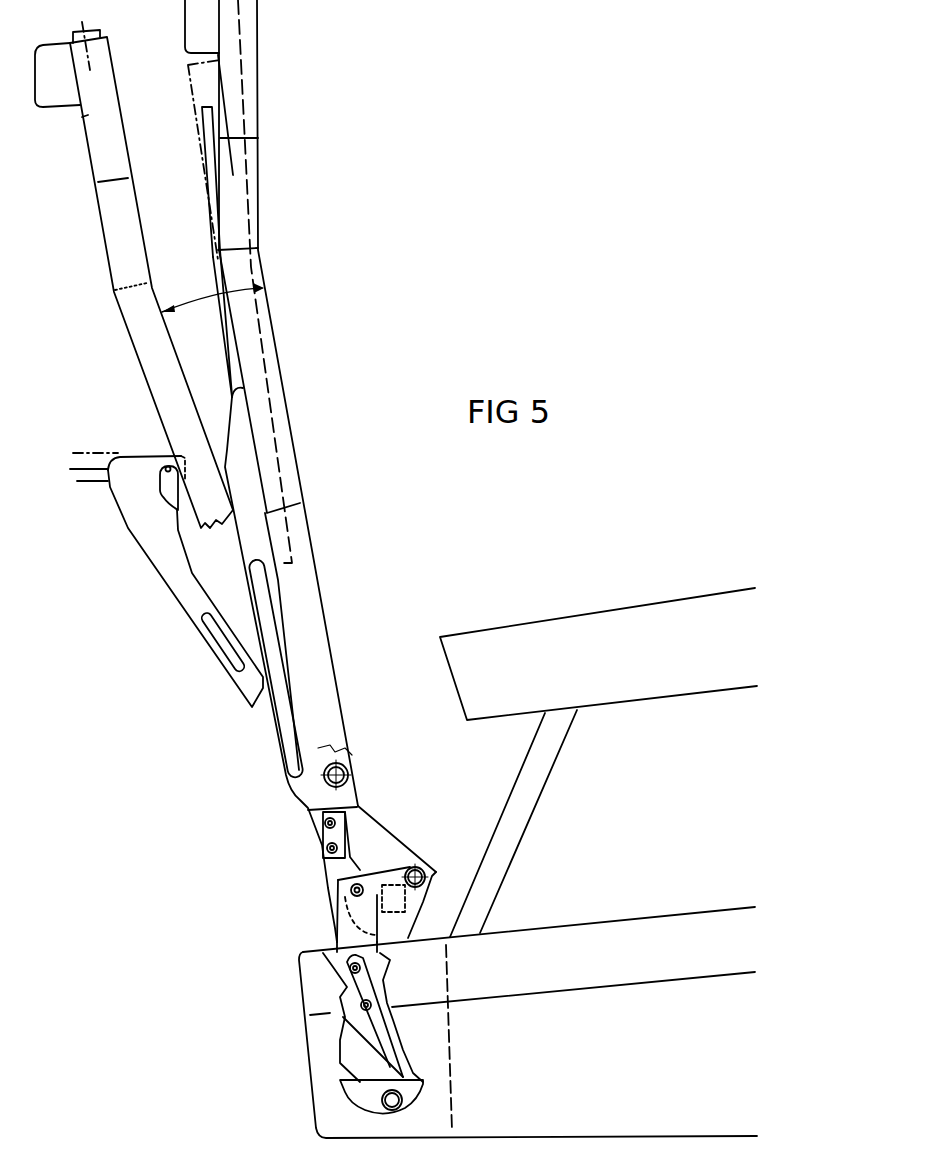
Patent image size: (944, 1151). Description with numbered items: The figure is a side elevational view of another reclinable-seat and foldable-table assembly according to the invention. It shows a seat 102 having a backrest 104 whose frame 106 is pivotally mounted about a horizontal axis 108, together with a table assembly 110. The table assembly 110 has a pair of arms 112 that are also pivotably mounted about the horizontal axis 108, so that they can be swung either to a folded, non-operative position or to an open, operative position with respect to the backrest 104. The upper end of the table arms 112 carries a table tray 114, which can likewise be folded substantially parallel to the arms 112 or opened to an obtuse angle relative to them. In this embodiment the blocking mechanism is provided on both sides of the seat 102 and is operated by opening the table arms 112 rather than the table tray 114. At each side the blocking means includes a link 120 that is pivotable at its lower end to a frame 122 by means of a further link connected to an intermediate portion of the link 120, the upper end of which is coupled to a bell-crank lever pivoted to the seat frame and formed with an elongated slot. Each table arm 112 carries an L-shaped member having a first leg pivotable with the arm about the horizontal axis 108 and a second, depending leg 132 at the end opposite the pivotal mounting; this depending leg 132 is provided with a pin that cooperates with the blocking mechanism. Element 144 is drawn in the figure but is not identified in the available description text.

The seat 102 is at (400, 606).
The backrest 104 is at (290, 433).
The frame 106 is at (349, 767).
The horizontal axis 108 is at (350, 895).
The table assembly 110 is at (158, 595).
The table arms 112 is at (277, 740).
The table tray 114 is at (200, 162).
The link 120 is at (377, 1032).
The frame 122 is at (413, 1093).
The second leg 132 is at (343, 940).
The pad 144 is at (89, 453).